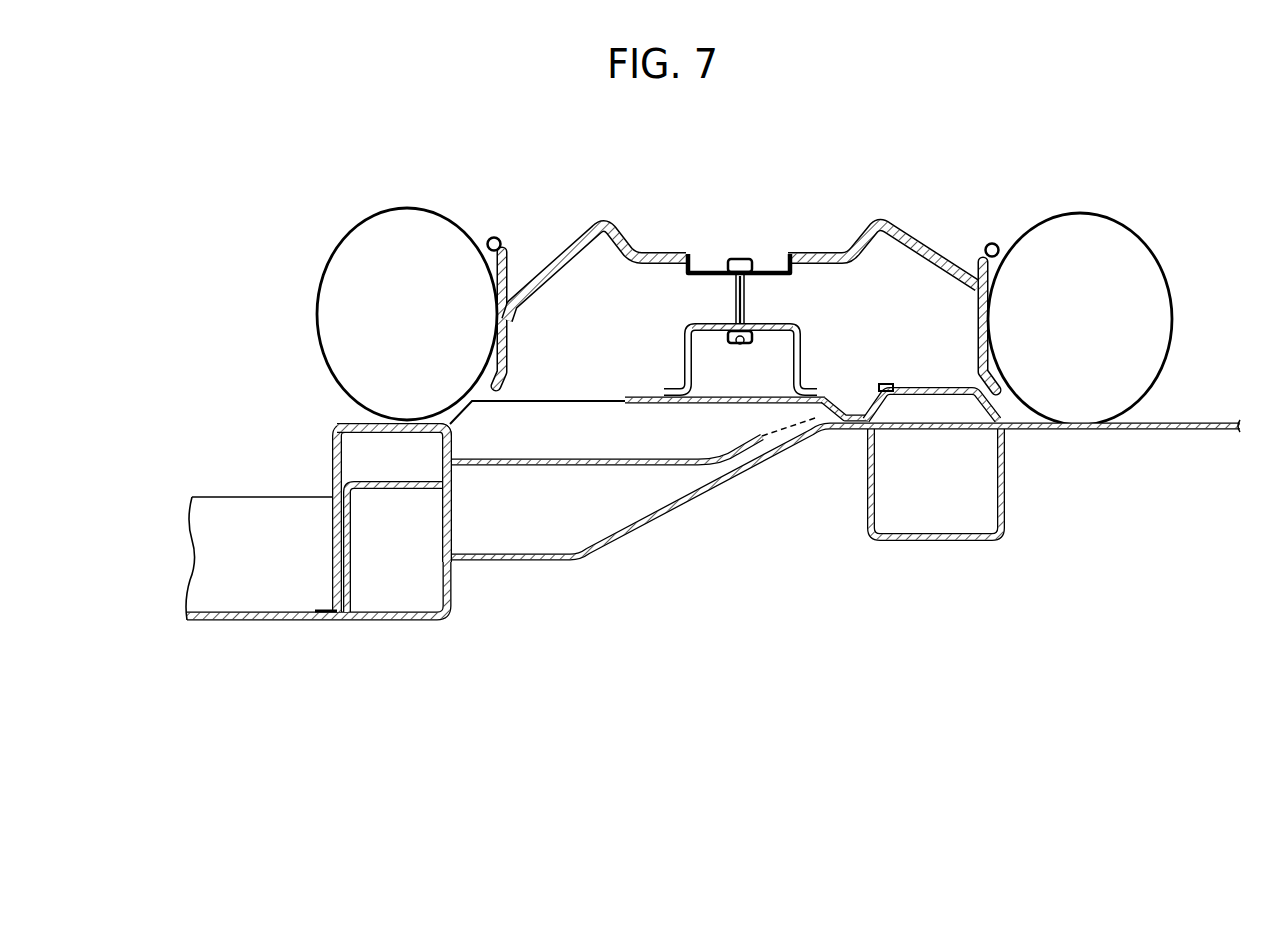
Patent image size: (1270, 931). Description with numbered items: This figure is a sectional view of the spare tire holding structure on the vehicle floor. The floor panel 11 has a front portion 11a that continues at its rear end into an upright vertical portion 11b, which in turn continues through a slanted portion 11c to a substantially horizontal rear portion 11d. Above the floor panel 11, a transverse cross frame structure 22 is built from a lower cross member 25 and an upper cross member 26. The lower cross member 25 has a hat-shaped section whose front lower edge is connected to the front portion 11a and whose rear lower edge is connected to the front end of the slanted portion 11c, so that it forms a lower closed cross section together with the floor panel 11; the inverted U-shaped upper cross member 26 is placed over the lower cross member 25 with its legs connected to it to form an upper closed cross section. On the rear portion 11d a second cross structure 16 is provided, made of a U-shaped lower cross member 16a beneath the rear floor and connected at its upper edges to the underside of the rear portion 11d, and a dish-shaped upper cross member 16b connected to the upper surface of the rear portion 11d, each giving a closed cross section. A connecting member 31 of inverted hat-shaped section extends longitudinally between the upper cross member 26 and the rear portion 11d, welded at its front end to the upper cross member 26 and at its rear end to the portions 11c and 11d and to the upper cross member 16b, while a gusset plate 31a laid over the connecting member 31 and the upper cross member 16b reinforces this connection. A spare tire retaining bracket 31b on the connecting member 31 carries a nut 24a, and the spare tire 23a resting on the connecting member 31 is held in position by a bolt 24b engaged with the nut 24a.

The floor panel 11 is at (713, 537).
The front portion of floor panel 11a is at (395, 622).
The upright vertical portion of floor panel 11b is at (452, 598).
The slanted portion of floor panel 11c is at (692, 490).
The rear portion of floor panel 11d is at (1148, 424).
The second cross structure 16 is at (979, 470).
The lower cross member of second cross structure 16a is at (948, 541).
The upper cross member of second cross structure 16b is at (943, 391).
The cross frame structure 22 is at (316, 526).
The spare tire 23a is at (470, 199).
The nut 24a is at (758, 340).
The bolt 24b is at (741, 258).
The lower cross member 25 is at (388, 488).
The upper cross member 26 is at (360, 423).
The connecting member 31 is at (668, 407).
The gusset plate 31a is at (830, 398).
The spare tire retaining bracket 31b is at (688, 327).